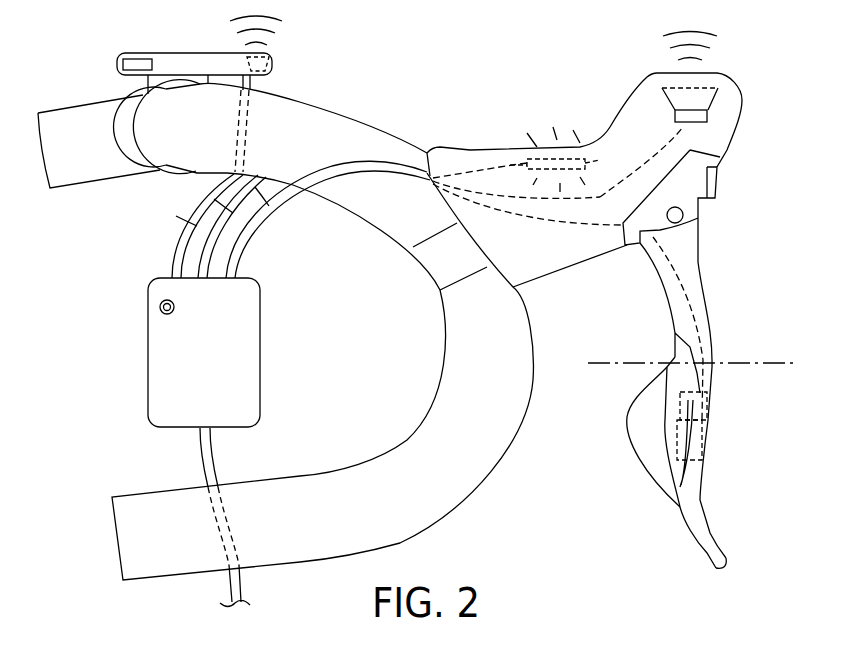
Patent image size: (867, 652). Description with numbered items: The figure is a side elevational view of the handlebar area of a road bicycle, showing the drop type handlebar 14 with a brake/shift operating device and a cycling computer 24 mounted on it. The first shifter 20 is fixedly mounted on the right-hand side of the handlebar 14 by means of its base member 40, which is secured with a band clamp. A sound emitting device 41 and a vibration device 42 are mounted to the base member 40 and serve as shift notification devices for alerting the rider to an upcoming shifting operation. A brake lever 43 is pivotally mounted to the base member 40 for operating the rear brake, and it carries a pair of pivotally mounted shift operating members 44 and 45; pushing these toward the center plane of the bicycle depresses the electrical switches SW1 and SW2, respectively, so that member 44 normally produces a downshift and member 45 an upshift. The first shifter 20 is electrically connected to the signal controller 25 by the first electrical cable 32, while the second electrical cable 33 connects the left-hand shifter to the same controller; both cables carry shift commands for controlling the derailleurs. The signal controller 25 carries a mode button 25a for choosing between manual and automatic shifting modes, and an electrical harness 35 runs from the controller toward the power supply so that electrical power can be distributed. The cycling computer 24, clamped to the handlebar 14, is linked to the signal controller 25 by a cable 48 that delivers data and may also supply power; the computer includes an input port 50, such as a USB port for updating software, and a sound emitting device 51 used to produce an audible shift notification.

The handlebar 14 is at (368, 120).
The first shifter 20 is at (745, 88).
The cycling computer 24 is at (173, 57).
The signal controller 25 is at (148, 365).
The mode button 25a is at (158, 304).
The first electrical cable 32 is at (250, 220).
The second electrical cable 33 is at (174, 233).
The electrical harness 35 is at (198, 458).
The base member 40 is at (485, 148).
The sound emitting device 41 is at (712, 106).
The vibration device 42 is at (563, 150).
The brake lever 43 is at (707, 307).
The shift operating member 44 is at (650, 457).
The shift operating member 45 is at (675, 352).
The cable 48 is at (213, 247).
The input port 50 is at (117, 63).
The sound emitting device 51 is at (272, 63).
The electrical switch SW1 is at (705, 455).
The electrical switch SW2 is at (710, 405).